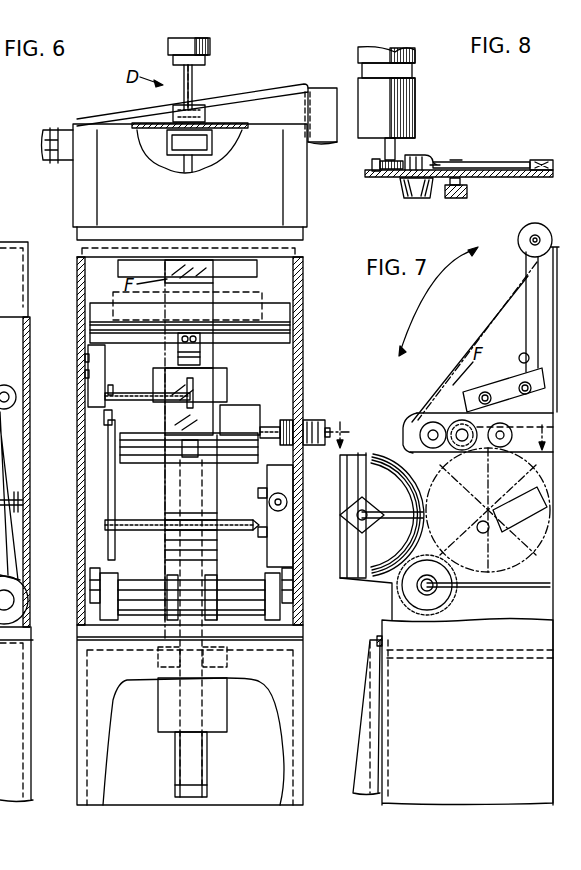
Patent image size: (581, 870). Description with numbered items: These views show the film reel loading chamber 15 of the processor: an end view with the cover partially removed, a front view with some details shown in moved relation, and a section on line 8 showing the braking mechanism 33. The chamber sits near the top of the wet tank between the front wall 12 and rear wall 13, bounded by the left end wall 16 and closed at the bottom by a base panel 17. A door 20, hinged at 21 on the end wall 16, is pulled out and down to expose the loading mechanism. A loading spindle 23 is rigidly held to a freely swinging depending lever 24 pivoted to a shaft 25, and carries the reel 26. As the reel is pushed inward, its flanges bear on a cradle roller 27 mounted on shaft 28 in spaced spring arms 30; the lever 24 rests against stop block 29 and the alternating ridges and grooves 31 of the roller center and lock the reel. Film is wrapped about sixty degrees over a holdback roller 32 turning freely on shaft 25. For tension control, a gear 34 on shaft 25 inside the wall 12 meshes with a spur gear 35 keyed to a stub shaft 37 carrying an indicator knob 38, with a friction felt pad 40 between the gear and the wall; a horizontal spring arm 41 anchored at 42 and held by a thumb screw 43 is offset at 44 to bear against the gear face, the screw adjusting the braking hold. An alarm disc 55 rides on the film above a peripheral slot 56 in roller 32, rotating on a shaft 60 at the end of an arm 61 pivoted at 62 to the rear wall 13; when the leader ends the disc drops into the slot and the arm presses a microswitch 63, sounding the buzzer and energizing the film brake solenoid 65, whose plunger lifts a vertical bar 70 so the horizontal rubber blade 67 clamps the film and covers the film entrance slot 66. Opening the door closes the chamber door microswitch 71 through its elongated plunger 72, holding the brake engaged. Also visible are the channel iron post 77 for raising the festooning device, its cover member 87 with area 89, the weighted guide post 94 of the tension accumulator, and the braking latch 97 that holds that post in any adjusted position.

In FIG. 6, the section line 8— 8 is at (337, 426).
In FIG. 7, the section line 8— 8 is at (541, 430).
In FIG. 6, the front wall 12 is at (300, 761).
In FIG. 8, the front wall 12 is at (508, 176).
In FIG. 7, the front wall 12 is at (402, 770).
In FIG. 6, the rear wall 13 is at (80, 731).
In FIG. 6, the film reel loading chamber 15 is at (0, 331).
In FIG. 6, the left end wall 16 is at (284, 678).
In FIG. 7, the left end wall 16 is at (388, 727).
In FIG. 6, the base panel 17 is at (253, 653).
In FIG. 7, the base panel 17 is at (533, 657).
In FIG. 6, the door 20 is at (300, 246).
In FIG. 7, the door 20 is at (365, 728).
In FIG. 6, the hinge 21 is at (300, 640).
In FIG. 7, the hinge 21 is at (375, 637).
In FIG. 6, the loading spindle 23 is at (250, 520).
In FIG. 7, the loading spindle 23 is at (487, 534).
In FIG. 6, the depending lever 24 is at (87, 470).
In FIG. 7, the depending lever 24 is at (462, 507).
In FIG. 6, the shaft 25 is at (80, 431).
In FIG. 8, the shaft 25 is at (385, 146).
In FIG. 7, the shaft 25 is at (428, 435).
In FIG. 6, the reel 26 is at (165, 500).
In FIG. 7, the reel 26 is at (483, 597).
In FIG. 6, the cradle roller 27 is at (133, 607).
In FIG. 7, the cradle roller 27 is at (430, 625).
In FIG. 6, the shaft 28 is at (87, 596).
In FIG. 7, the shaft 28 is at (420, 585).
In FIG. 6, the stop block 29 is at (85, 497).
In FIG. 7, the stop block 29 is at (527, 508).
In FIG. 6, the spring arms 30 is at (293, 586).
In FIG. 7, the spring arms 30 is at (474, 590).
In FIG. 6, the ridges and grooves 31 is at (247, 587).
In FIG. 6, the holdback roller 32 is at (243, 408).
In FIG. 8, the holdback roller 32 is at (408, 94).
In FIG. 7, the holdback roller 32 is at (407, 425).
In FIG. 8, the braking mechanism 33 is at (500, 159).
In FIG. 6, the gear 34 is at (290, 422).
In FIG. 8, the gear 34 is at (372, 163).
In FIG. 7, the gear 34 is at (430, 399).
In FIG. 8, the spur gear 35 is at (402, 174).
In FIG. 6, the stub shaft 37 is at (318, 420).
In FIG. 8, the stub shaft 37 is at (415, 200).
In FIG. 7, the stub shaft 37 is at (464, 457).
In FIG. 6, the indicator knob 38 is at (322, 420).
In FIG. 8, the indicator knob 38 is at (403, 195).
In FIG. 7, the indicator knob 38 is at (458, 452).
In FIG. 6, the friction felt pad 40 is at (300, 412).
In FIG. 8, the friction felt pad 40 is at (437, 180).
In FIG. 8, the horizontal spring arm 41 is at (472, 162).
In FIG. 7, the horizontal spring arm 41 is at (527, 453).
In FIG. 8, the anchor 42 is at (540, 160).
In FIG. 6, the thumb screw 43 is at (328, 425).
In FIG. 8, the thumb screw 43 is at (455, 199).
In FIG. 7, the thumb screw 43 is at (502, 423).
In FIG. 8, the offset 44 is at (412, 157).
In FIG. 6, the alarm disc 55 is at (188, 388).
In FIG. 7, the alarm disc 55 is at (522, 246).
In FIG. 6, the peripheral slot 56 is at (187, 458).
In FIG. 8, the peripheral slot 56 is at (410, 72).
In FIG. 6, the shaft 60 is at (88, 374).
In FIG. 7, the shaft 60 is at (522, 236).
In FIG. 6, the arm 61 is at (100, 354).
In FIG. 7, the arm 61 is at (528, 297).
In FIG. 6, the pivot 62 is at (88, 357).
In FIG. 7, the pivot 62 is at (523, 353).
In FIG. 6, the microswitch 63 is at (110, 419).
In FIG. 7, the microswitch 63 is at (502, 383).
In FIG. 6, the film brake solenoid 65 is at (160, 716).
In FIG. 6, the film entrance slot 66 is at (253, 268).
In FIG. 6, the horizontal rubber blade 67 is at (260, 298).
In FIG. 6, the vertical bar 70 is at (193, 362).
In FIG. 6, the chamber door microswitch 71 is at (287, 553).
In FIG. 6, the elongated plunger 72 is at (273, 497).
In FIG. 6, the channel iron post 77 is at (323, 102).
In FIG. 6, the cover member 87 is at (105, 184).
In FIG. 6, the housing interior 89 is at (252, 197).
In FIG. 6, the weighted guide post 94 is at (193, 77).
In FIG. 6, the braking latch 97 is at (207, 112).